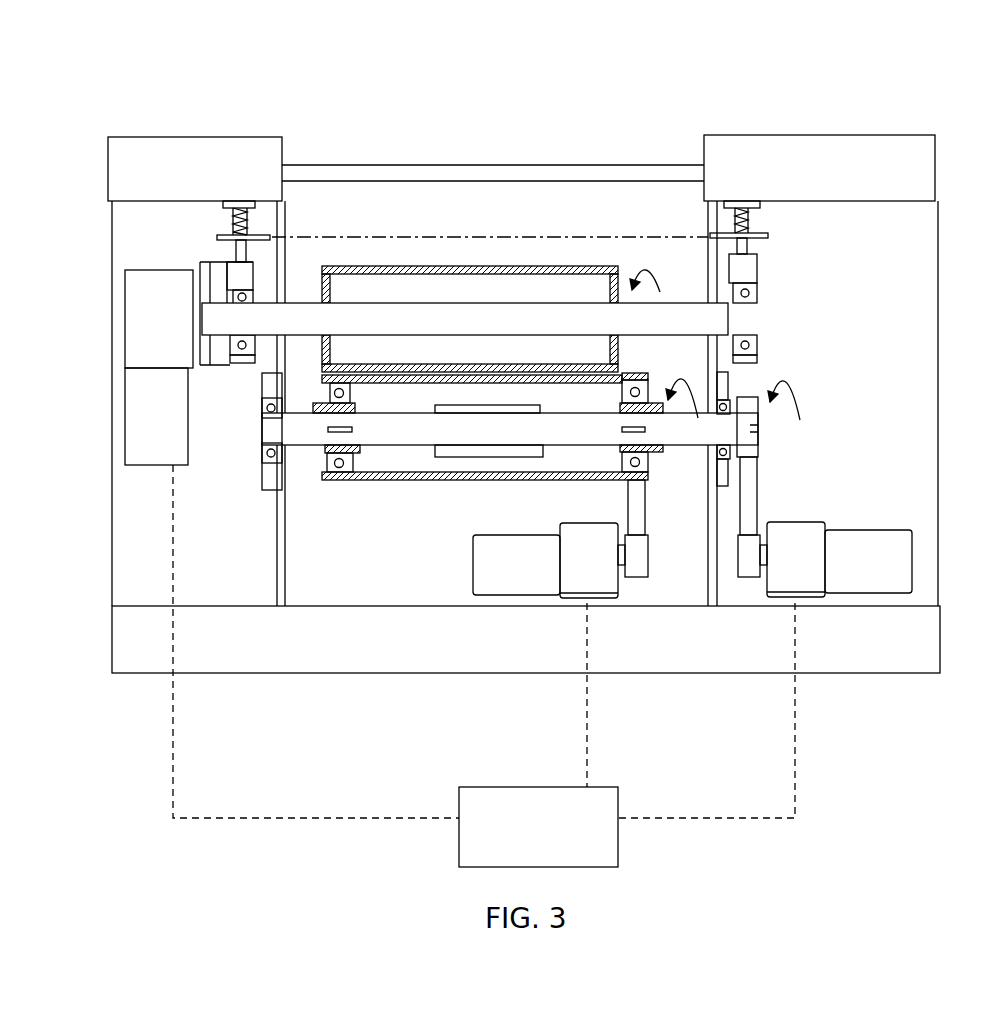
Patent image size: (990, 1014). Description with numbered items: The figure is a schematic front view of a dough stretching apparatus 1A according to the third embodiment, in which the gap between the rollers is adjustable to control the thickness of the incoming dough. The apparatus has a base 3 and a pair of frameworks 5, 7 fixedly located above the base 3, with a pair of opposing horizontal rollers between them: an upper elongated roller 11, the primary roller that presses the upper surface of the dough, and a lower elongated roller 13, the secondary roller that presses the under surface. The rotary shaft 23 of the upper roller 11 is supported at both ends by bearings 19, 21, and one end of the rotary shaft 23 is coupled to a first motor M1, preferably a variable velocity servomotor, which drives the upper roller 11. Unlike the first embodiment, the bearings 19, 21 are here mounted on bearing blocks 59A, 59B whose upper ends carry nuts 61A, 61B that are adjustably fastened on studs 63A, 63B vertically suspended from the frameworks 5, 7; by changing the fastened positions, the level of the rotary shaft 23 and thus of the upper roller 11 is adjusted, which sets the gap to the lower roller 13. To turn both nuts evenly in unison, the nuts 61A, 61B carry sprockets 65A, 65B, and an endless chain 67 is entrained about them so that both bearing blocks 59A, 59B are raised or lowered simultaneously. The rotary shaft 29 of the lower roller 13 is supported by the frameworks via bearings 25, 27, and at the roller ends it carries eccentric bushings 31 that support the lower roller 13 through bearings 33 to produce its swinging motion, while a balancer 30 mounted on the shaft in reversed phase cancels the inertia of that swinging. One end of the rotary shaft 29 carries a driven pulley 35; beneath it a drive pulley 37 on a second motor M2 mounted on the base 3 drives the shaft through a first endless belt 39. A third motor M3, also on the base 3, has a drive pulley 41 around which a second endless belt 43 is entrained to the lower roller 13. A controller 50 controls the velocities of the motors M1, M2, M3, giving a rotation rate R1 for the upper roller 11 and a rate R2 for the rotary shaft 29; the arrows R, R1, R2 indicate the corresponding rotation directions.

The stretching apparatus 1A is at (710, 124).
The base 3 is at (490, 673).
The framework 5 is at (194, 142).
The framework 7 is at (846, 136).
The upper elongated roller 11 is at (517, 266).
The lower elongated roller 13 is at (418, 480).
The bearing 19 is at (244, 352).
The bearing 21 is at (752, 293).
The rotary shaft 23 is at (437, 318).
The bearing 25 is at (266, 454).
The bearing 27 is at (712, 478).
The rotary shaft 29 is at (462, 436).
The balancer 30 is at (532, 457).
The eccentric bushings 31 is at (360, 462).
The bearings 33 is at (326, 468).
The driven pulley 35 is at (756, 448).
The drive pulley 37 is at (748, 577).
The first endless belt 39 is at (757, 488).
The drive pulley 41 is at (636, 577).
The second endless belt 43 is at (645, 525).
The controller 50 is at (552, 787).
The bearing block 59A is at (236, 275).
The bearing block 59B is at (748, 268).
The nut 61A is at (240, 250).
The nut 61B is at (745, 248).
The stud 63A is at (236, 216).
The stud 63B is at (755, 212).
The sprocket 65A is at (228, 230).
The sprocket 65B is at (758, 232).
The endless chain 67 is at (328, 234).
The first motor M1 is at (148, 468).
The second motor M2 is at (872, 540).
The third motor M3 is at (476, 570).
The rotation direction R is at (652, 269).
The rotation rate of the upper roller R1 is at (805, 400).
The rotation rate of the shaft R2 is at (685, 381).